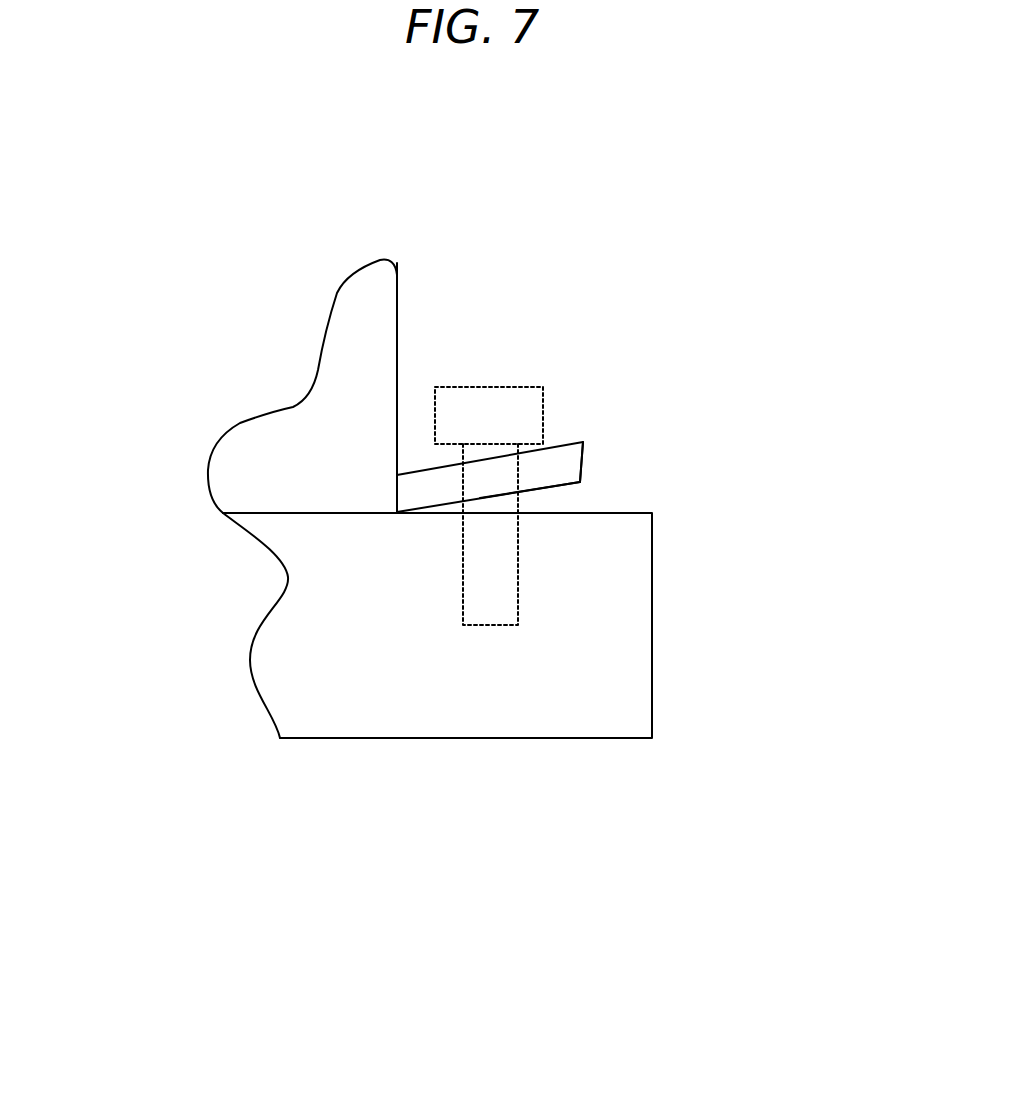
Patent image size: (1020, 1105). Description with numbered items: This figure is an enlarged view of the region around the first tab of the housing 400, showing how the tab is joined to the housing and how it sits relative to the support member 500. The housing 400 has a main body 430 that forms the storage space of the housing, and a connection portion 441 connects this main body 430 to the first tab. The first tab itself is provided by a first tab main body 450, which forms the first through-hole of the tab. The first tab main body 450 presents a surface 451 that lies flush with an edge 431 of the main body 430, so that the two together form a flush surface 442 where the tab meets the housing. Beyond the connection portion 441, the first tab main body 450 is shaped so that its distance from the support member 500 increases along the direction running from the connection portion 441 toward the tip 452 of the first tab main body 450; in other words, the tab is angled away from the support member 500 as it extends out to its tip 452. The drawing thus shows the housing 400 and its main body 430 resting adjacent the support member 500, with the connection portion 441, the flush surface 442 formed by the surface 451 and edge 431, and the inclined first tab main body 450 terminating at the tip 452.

The housing 400 is at (277, 447).
The main body 430 is at (377, 323).
The edge 431 is at (303, 513).
The connection portion 441 is at (397, 492).
The flush surface 442 is at (397, 513).
The first tab main body 450 is at (563, 463).
The surface 451 is at (533, 492).
The tip 452 is at (580, 482).
The support member 500 is at (607, 700).